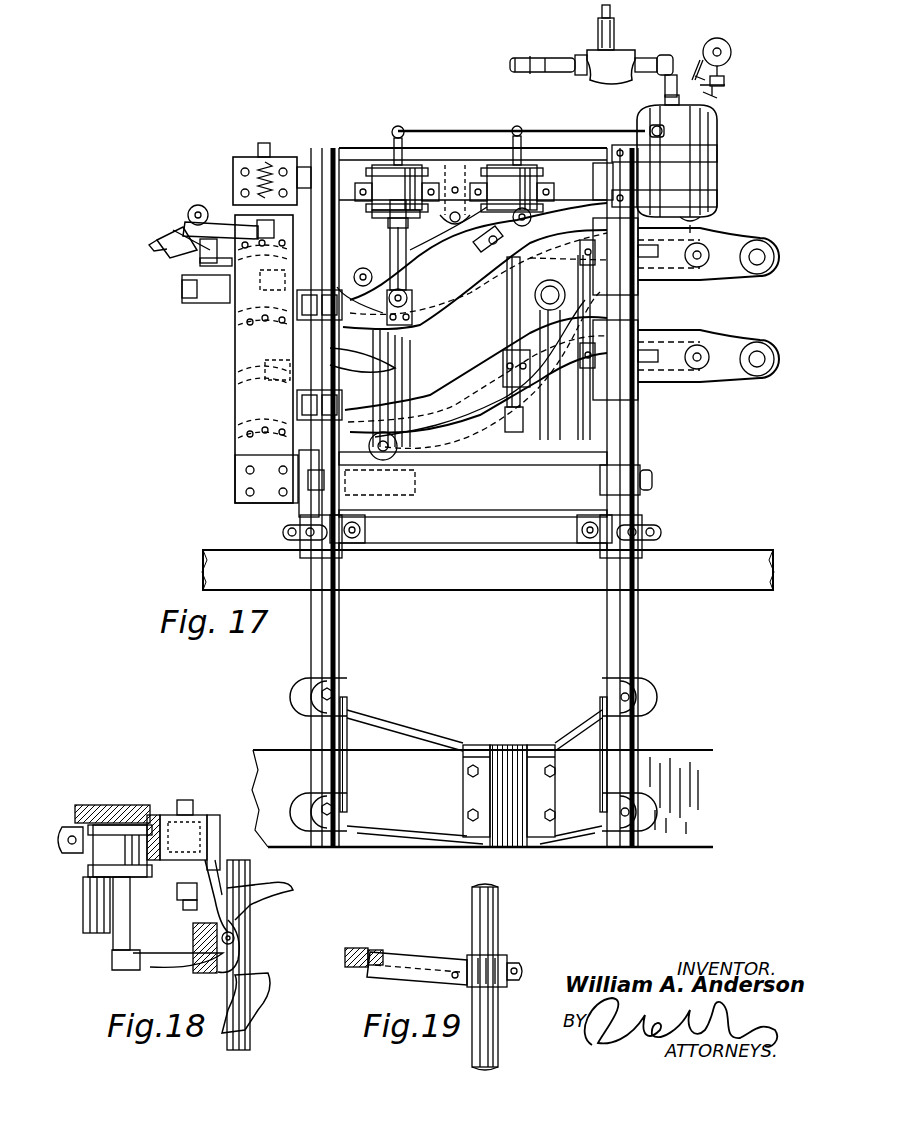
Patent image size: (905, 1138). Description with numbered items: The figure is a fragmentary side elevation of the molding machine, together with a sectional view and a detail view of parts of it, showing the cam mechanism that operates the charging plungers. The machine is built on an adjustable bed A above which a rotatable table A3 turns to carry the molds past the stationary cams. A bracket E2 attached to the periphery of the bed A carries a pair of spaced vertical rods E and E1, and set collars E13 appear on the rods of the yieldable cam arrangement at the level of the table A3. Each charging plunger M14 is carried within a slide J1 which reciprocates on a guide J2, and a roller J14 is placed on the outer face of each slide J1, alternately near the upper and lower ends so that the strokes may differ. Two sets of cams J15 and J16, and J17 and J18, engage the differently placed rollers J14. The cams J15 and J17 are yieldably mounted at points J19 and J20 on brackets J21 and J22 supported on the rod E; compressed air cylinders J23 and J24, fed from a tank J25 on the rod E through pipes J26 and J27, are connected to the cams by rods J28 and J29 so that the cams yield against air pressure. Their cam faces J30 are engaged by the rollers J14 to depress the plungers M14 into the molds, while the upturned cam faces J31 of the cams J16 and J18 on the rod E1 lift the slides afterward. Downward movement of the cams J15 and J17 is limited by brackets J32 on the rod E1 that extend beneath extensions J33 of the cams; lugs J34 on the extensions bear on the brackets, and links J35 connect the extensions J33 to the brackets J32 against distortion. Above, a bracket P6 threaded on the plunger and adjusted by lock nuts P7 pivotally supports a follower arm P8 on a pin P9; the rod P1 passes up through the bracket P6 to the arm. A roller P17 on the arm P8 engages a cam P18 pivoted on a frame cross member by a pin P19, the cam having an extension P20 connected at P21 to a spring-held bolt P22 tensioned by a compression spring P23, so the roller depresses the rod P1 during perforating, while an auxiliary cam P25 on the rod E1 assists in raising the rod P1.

In FIG. 17, the rod E is at (615, 636).
In FIG. 17, the rod E1 is at (322, 637).
In FIG. 18, the rod E1 is at (238, 955).
In FIG. 19, the rod E1 is at (498, 917).
In FIG. 17, the bracket E2 is at (465, 745).
In FIG. 17, the set collar E13 is at (502, 540).
In FIG. 17, the bed A is at (680, 780).
In FIG. 17, the rotatable table A3 is at (718, 560).
In FIG. 17, the rod P1 is at (200, 255).
In FIG. 17, the bracket P6 is at (170, 240).
In FIG. 17, the lock nuts P7 is at (185, 290).
In FIG. 17, the follower arm P8 is at (200, 230).
In FIG. 17, the pin or bolt P9 is at (155, 243).
In FIG. 17, the roller P17 is at (197, 212).
In FIG. 17, the cam P18 is at (401, 245).
In FIG. 17, the pin P19 is at (454, 194).
In FIG. 17, the extension P20 is at (257, 226).
In FIG. 18, the extension P20 is at (192, 900).
In FIG. 17, the pivotal connection P21 is at (205, 268).
In FIG. 17, the spring held bolt P22 is at (262, 180).
In FIG. 18, the spring held bolt P22 is at (178, 887).
In FIG. 17, the compression spring P23 is at (270, 185).
In FIG. 17, the auxiliary cam P25 is at (262, 232).
In FIG. 17, the slide J1 is at (557, 322).
In FIG. 17, the guide J2 is at (200, 285).
In FIG. 17, the roller J14 is at (548, 283).
In FIG. 17, the cam J15 is at (483, 275).
In FIG. 18, the cam J15 is at (235, 937).
In FIG. 17, the cam J16 is at (300, 352).
In FIG. 17, the cam J17 is at (463, 380).
In FIG. 17, the cam J18 is at (258, 428).
In FIG. 17, the mounting point J19 is at (757, 240).
In FIG. 17, the mounting point J20 is at (757, 342).
In FIG. 17, the bracket J21 is at (640, 275).
In FIG. 17, the bracket J22 is at (645, 380).
In FIG. 17, the compressed air cylinder J23 is at (390, 180).
In FIG. 18, the compressed air cylinder J23 is at (125, 845).
In FIG. 17, the compressed air cylinder J24 is at (515, 190).
In FIG. 17, the tank J25 is at (700, 140).
In FIG. 17, the pipe J26 is at (452, 128).
In FIG. 17, the pipe J27 is at (552, 128).
In FIG. 17, the rod J28 is at (404, 285).
In FIG. 18, the rod J28 is at (115, 945).
In FIG. 17, the rod J29 is at (500, 298).
In FIG. 17, the cam face J30 is at (412, 312).
In FIG. 17, the cam face J31 is at (320, 372).
In FIG. 19, the bracket J32 is at (430, 956).
In FIG. 17, the extension J33 is at (235, 318).
In FIG. 18, the extension J33 is at (272, 888).
In FIG. 19, the extension J33 is at (358, 948).
In FIG. 19, the lug J34 is at (378, 950).
In FIG. 19, the link J35 is at (388, 977).
In FIG. 17, the charging plunger M14 is at (540, 445).